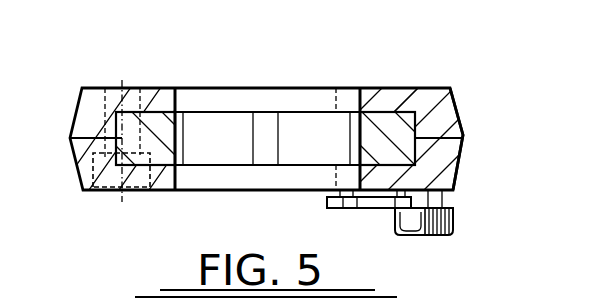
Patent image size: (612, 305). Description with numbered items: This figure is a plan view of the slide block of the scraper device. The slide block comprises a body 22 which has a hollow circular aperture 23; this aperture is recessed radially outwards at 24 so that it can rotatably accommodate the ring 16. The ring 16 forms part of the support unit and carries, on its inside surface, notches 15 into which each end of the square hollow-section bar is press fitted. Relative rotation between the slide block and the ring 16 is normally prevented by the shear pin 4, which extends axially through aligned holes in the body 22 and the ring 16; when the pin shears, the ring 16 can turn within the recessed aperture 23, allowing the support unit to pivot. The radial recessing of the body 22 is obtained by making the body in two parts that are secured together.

The hollow circular aperture 23 is at (237, 87).
The notches 15 is at (268, 125).
The ring 16 is at (387, 122).
The radial recess 24 is at (407, 112).
The body 22 is at (457, 103).
The shear pin 4 is at (353, 211).